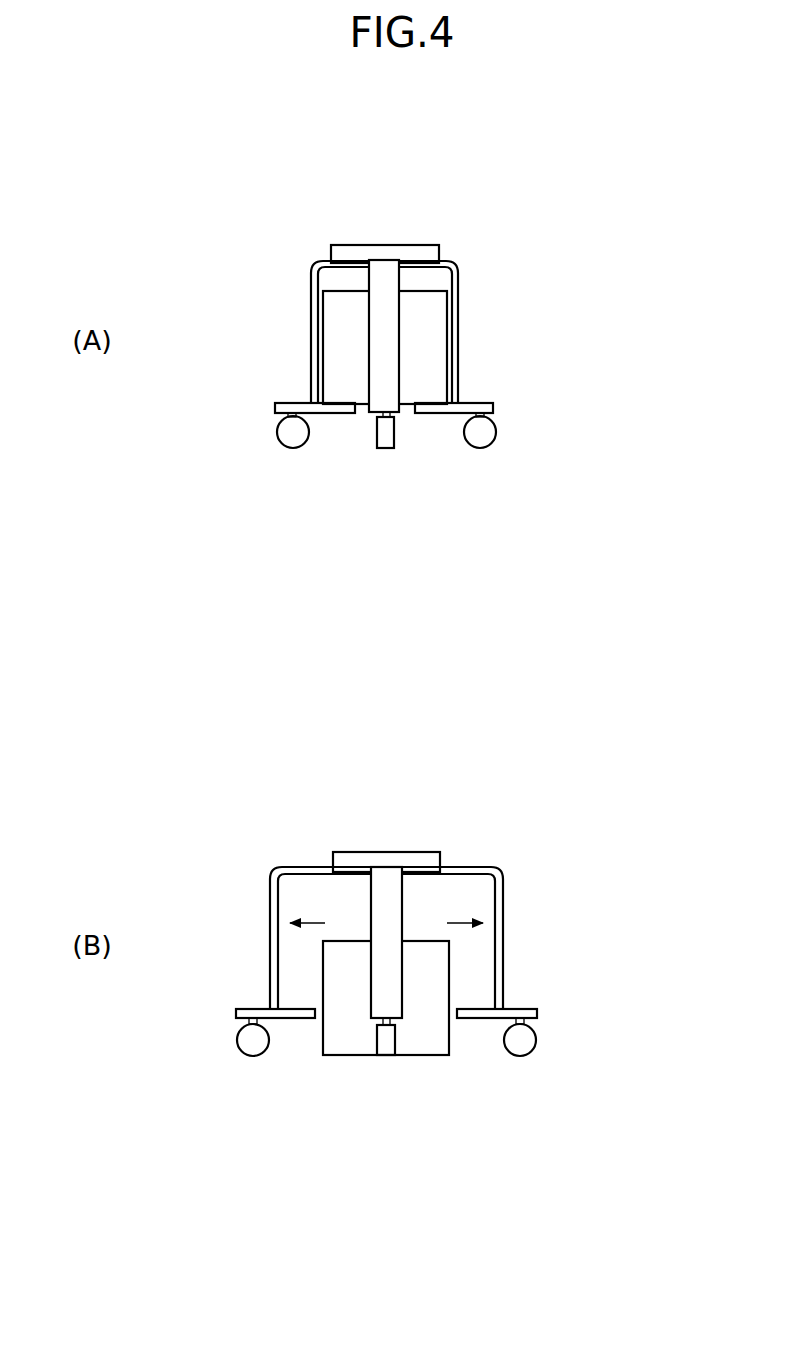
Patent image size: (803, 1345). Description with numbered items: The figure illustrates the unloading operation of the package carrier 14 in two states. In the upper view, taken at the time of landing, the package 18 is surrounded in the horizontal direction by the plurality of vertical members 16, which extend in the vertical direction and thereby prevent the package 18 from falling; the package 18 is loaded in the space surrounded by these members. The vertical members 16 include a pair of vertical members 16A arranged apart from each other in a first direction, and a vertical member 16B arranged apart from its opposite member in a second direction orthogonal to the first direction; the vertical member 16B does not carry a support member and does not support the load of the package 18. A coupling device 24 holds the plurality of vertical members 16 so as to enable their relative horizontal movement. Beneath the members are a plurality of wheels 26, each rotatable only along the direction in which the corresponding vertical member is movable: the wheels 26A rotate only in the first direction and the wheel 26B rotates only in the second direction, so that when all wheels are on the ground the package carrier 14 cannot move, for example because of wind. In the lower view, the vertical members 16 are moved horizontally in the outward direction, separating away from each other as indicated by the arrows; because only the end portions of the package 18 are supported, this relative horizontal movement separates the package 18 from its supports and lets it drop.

The package carrier 14 is at (535, 248).
The vertical members 16 is at (493, 188).
The vertical members 16A is at (311, 268).
The vertical member 16B is at (387, 272).
The package 18 is at (407, 360).
The coupling device 24 is at (353, 257).
The wheels 26 is at (512, 505).
The wheels 26A is at (293, 440).
The wheel 26B is at (386, 444).